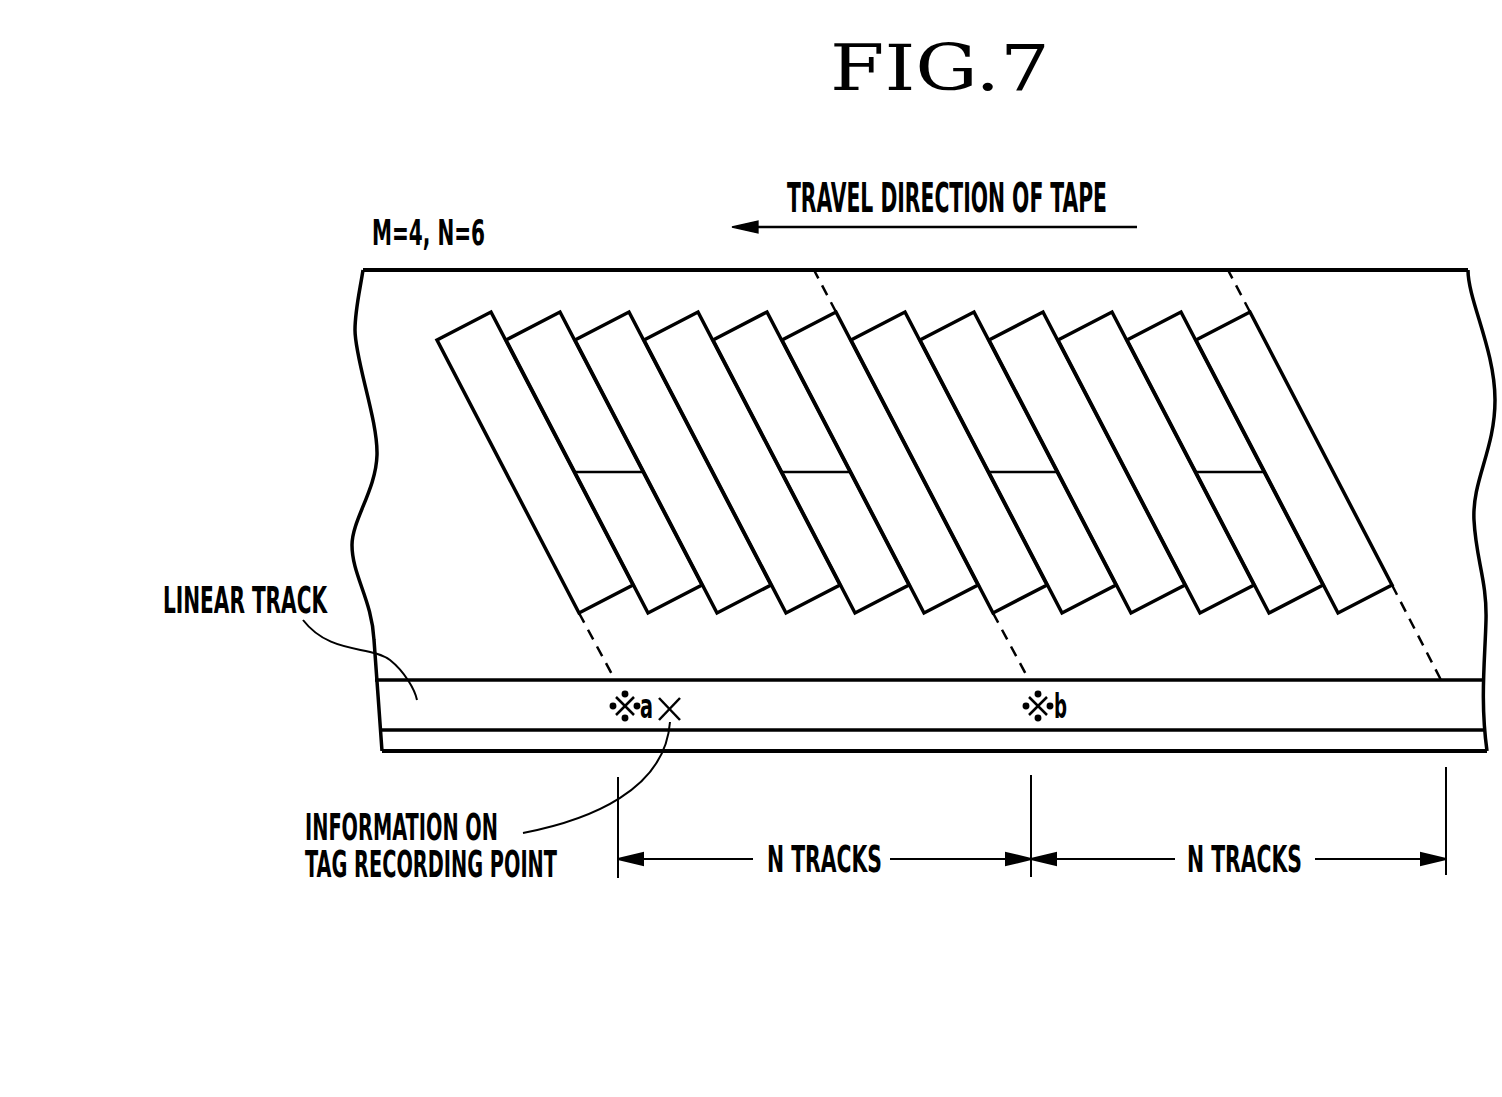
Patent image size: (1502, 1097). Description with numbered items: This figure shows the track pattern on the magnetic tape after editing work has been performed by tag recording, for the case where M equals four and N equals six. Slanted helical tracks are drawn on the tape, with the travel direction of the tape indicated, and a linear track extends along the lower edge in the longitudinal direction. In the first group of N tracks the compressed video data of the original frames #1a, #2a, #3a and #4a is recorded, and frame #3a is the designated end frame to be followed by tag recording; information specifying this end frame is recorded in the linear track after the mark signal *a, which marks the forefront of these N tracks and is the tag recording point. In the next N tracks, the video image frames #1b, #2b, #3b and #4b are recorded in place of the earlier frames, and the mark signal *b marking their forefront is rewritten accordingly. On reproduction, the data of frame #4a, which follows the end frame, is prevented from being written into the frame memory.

The frame # 1a is at (535, 462).
The frame # 2a is at (604, 462).
The frame # 3a is at (742, 462).
The frame # 4a is at (811, 462).
The frame # 1b is at (949, 462).
The frame # 2b is at (1018, 462).
The frame # 3b is at (1156, 462).
The frame # 4b is at (1225, 462).